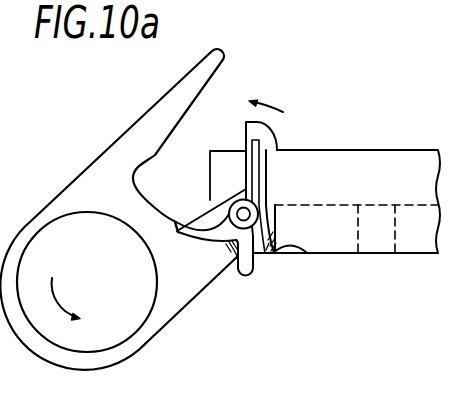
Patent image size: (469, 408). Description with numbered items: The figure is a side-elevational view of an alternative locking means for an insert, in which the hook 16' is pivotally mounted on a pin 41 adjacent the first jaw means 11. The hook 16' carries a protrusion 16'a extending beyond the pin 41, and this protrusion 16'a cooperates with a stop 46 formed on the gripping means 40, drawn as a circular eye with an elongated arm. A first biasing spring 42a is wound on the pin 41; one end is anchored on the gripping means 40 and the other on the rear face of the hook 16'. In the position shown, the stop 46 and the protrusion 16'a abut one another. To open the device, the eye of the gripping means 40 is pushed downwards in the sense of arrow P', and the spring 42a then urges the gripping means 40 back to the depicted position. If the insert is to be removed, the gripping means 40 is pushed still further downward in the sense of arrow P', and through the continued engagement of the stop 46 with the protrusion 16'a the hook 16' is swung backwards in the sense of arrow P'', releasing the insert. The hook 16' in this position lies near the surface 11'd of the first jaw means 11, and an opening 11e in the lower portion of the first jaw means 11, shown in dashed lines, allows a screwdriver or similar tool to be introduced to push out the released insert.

The gripping means 40 is at (114, 150).
The pin 41 is at (239, 201).
The first biasing spring 42a is at (178, 223).
The hook 16' is at (243, 151).
The protrusion 16'a is at (277, 277).
The stop 46 is at (232, 262).
The first jaw means 11 is at (346, 181).
The contact surface of housing 11'd is at (321, 265).
The opening 11e is at (381, 245).
The arrow P' is at (73, 295).
The arrow P'' is at (277, 92).